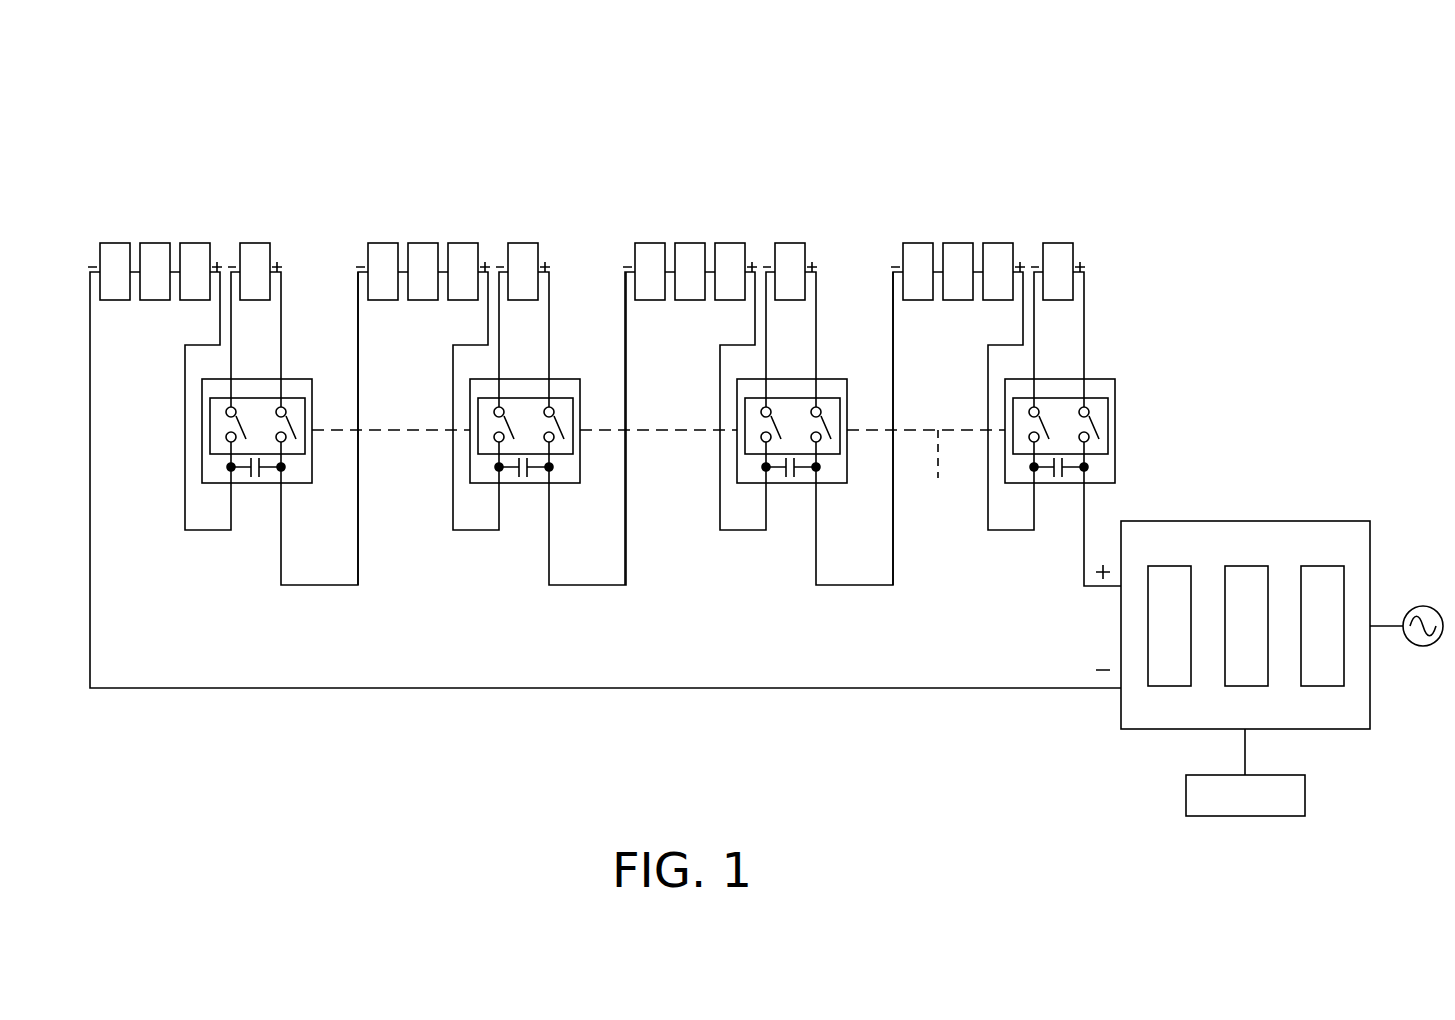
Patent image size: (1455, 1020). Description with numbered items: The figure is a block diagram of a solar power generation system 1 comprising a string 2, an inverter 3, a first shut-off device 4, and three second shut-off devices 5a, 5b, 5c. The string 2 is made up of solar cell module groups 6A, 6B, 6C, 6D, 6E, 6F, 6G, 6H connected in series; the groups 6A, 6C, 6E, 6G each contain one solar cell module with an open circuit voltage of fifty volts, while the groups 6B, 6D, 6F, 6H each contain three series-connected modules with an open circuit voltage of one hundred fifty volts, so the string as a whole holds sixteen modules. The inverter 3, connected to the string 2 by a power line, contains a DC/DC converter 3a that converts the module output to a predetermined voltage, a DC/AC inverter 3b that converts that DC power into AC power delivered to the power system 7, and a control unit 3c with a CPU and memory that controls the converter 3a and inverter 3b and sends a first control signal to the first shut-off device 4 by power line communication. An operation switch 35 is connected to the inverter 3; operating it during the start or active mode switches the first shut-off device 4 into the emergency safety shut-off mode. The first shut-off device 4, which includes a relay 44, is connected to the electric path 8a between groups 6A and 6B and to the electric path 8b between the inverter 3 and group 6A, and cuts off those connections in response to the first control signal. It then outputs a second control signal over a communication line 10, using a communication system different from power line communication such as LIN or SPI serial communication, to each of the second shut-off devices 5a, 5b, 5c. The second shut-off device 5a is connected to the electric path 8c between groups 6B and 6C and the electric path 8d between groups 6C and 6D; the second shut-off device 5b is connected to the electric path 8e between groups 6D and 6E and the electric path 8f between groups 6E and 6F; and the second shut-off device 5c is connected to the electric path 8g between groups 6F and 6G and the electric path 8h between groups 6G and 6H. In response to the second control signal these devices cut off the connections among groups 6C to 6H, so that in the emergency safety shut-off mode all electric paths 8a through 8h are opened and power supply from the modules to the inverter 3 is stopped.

The solar power generation system 1 is at (1243, 182).
The string 2 is at (1077, 80).
The inverter 3 is at (1357, 521).
The DC/DC converter 3a is at (1170, 566).
The DC/AC inverter 3b is at (1246, 566).
The control unit 3c is at (1322, 566).
The first shut-off device 4 is at (1115, 376).
The second shut-off device 5a is at (790, 488).
The second shut-off device 5b is at (523, 488).
The second shut-off device 5c is at (255, 488).
The solar cell module group 6A is at (1035, 144).
The solar cell module group 6B is at (906, 144).
The solar cell module group 6C is at (767, 144).
The solar cell module group 6D is at (638, 144).
The solar cell module group 6E is at (500, 144).
The solar cell module group 6F is at (371, 144).
The solar cell module group 6G is at (232, 144).
The solar cell module group 6H is at (103, 144).
The power system 7 is at (1423, 606).
The electric path 8a is at (1011, 530).
The electric path 8b is at (1102, 586).
The electric path 8c is at (855, 585).
The electric path 8d is at (743, 530).
The electric path 8e is at (588, 585).
The electric path 8f is at (476, 530).
The electric path 8g is at (320, 585).
The electric path 8h is at (208, 530).
The communication line 10 is at (658, 473).
The operation switch 35 is at (1305, 793).
The relay 44 is at (1011, 406).